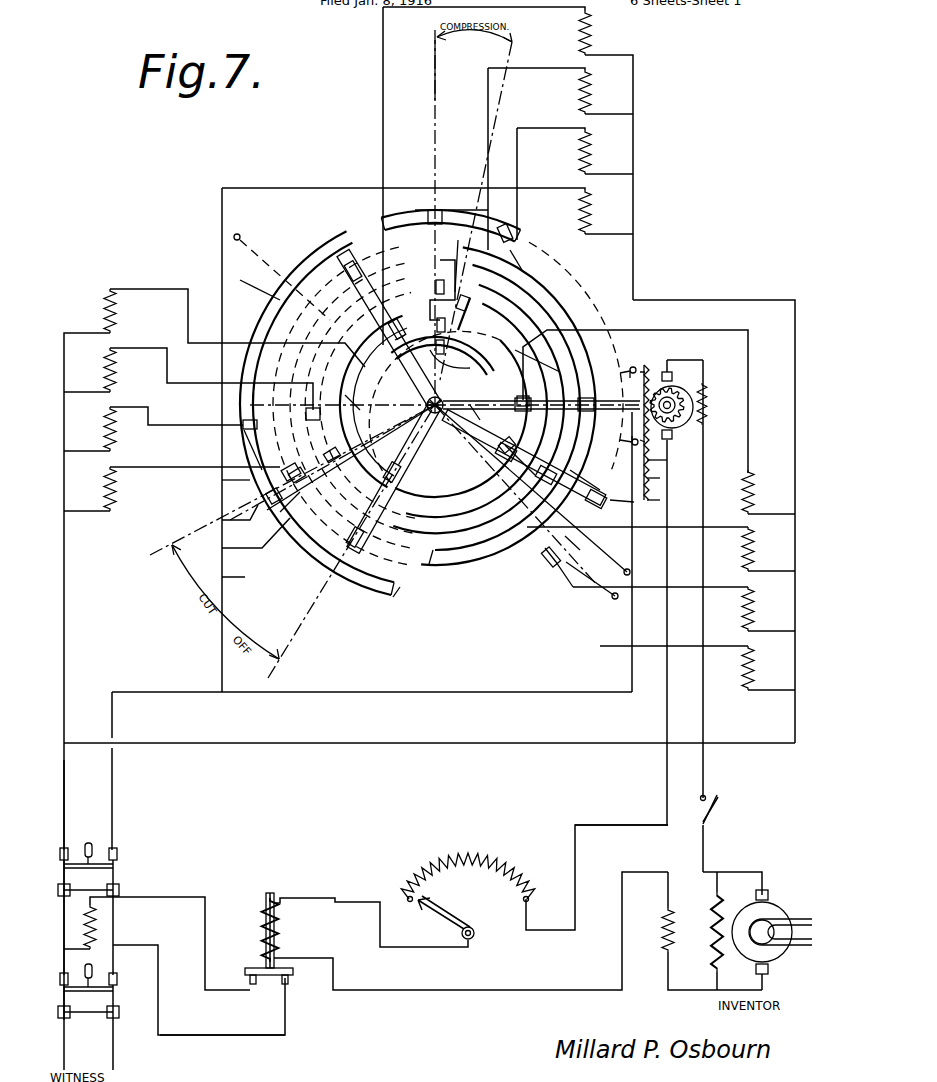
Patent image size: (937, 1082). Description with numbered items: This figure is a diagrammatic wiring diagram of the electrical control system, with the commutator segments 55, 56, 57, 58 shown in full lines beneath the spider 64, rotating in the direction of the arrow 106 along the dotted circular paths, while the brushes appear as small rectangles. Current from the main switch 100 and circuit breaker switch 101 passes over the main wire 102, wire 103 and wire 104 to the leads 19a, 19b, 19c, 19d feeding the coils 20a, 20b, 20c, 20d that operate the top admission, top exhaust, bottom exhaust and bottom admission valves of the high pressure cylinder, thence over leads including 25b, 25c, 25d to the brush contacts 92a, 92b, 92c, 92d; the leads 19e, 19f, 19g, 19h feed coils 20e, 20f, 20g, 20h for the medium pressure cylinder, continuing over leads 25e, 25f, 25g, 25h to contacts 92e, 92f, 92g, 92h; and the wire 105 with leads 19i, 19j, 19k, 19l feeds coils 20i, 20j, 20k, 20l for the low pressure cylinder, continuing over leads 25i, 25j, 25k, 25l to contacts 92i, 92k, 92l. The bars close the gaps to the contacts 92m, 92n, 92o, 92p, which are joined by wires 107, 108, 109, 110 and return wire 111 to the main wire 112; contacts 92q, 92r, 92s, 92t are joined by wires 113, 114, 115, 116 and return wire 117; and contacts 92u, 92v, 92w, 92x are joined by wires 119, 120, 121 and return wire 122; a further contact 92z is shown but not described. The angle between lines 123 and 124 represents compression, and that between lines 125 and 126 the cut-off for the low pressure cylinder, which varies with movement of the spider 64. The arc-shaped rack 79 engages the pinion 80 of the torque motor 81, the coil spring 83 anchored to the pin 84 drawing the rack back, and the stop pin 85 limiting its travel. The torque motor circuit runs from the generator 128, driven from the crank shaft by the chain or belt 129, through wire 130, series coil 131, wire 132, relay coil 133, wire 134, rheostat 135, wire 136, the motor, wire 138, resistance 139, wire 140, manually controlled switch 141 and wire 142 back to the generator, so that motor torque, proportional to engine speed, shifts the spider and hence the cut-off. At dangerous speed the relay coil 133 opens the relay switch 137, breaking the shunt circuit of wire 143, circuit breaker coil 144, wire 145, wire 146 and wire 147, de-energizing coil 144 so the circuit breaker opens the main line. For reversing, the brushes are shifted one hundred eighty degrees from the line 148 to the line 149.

The lead 19a is at (636, 55).
The lead 19b is at (636, 114).
The lead 19c is at (636, 172).
The lead 19d is at (636, 232).
The lead 19e is at (784, 513).
The lead 19f is at (786, 571).
The lead 19g is at (786, 631).
The lead 19h is at (786, 690).
The lead 19i is at (88, 325).
The lead 19j is at (88, 385).
The lead 19k is at (88, 445).
The lead 19l is at (88, 502).
The coil 20a is at (592, 36).
The coil 20b is at (592, 93).
The coil 20c is at (592, 149).
The coil 20d is at (592, 207).
The coil 20e is at (754, 490).
The coil 20f is at (754, 546).
The coil 20g is at (754, 598).
The coil 20h is at (754, 661).
The coil 20i is at (114, 313).
The coil 20j is at (114, 363).
The coil 20k is at (114, 423).
The coil 20l is at (114, 483).
The lead 25b is at (540, 62).
The lead 25c is at (545, 124).
The lead 25d is at (548, 184).
The lead 25e is at (745, 460).
The lead 25f is at (720, 527).
The lead 25g is at (720, 588).
The lead 25h is at (720, 648).
The lead 25i is at (192, 335).
The lead 25j is at (174, 370).
The lead 25k is at (174, 426).
The lead 25l is at (176, 469).
The commutator segment 55 is at (422, 479).
The commutator segment 56 is at (418, 518).
The commutator segment 57 is at (418, 550).
The commutator segment 58 is at (409, 584).
The spider 64 is at (453, 431).
The rack 79 is at (649, 364).
The pinion 80 is at (678, 390).
The torque motor 81 is at (690, 424).
The coil spring 83 is at (651, 479).
The pin 84 is at (651, 501).
The stop pin 85 is at (626, 377).
The brush contact 92a is at (555, 450).
The brush contact 92b is at (504, 308).
The brush contact 92c is at (512, 230).
The brush contact 92d is at (454, 210).
The brush contact 92e is at (518, 413).
The brush contact 92f is at (612, 365).
The brush contact 92g is at (556, 566).
The brush contact 92h is at (592, 452).
The brush contact 92i is at (488, 421).
The brush contact 92k is at (246, 436).
The brush contact 92l is at (390, 430).
The brush contact 92m is at (447, 336).
The brush contact 92n is at (428, 294).
The brush contact 92o is at (422, 212).
The brush contact 92p is at (342, 252).
The brush contact 92q is at (396, 342).
The brush contact 92r is at (490, 468).
The brush contact 92s is at (604, 500).
The brush contact 92t is at (391, 435).
The brush contact 92u is at (383, 402).
The brush contact 92v is at (480, 420).
The brush contact 92w is at (260, 490).
The brush contact 92x is at (358, 480).
The contact 92z is at (344, 548).
The main switch 100 is at (114, 999).
The circuit breaker switch 101 is at (120, 878).
The main wire 102 is at (66, 809).
The wire 103 is at (436, 744).
The wire 104 is at (688, 292).
The wire 105 is at (66, 611).
The arrow 106 is at (482, 382).
The wire 107 is at (458, 300).
The wire 108 is at (422, 274).
The wire 109 is at (355, 184).
The wire 110 is at (328, 208).
The return wire 111 is at (230, 238).
The main wire 112 is at (112, 714).
The wire 113 is at (490, 440).
The wire 114 is at (634, 502).
The wire 115 is at (648, 460).
The wire 116 is at (632, 547).
The return wire 117 is at (432, 690).
The wire 119 is at (334, 488).
The wire 120 is at (276, 524).
The wire 121 is at (280, 547).
The return wire 122 is at (227, 577).
The line 123 is at (434, 97).
The line 124 is at (508, 88).
The line 125 is at (297, 632).
The line 126 is at (214, 524).
The compound wound generator 128 is at (770, 906).
The chain or belt 129 is at (798, 921).
The wire 130 is at (692, 990).
The series coil 131 is at (664, 944).
The wire 132 is at (476, 990).
The relay coil 133 is at (276, 934).
The wire 134 is at (328, 900).
The rheostat 135 is at (475, 840).
The wire 136 is at (613, 823).
The relay switch 137 is at (282, 980).
The wire 138 is at (686, 356).
The resistance 139 is at (704, 403).
The wire 140 is at (704, 712).
The manually controlled switch 141 is at (714, 812).
The wire 142 is at (734, 872).
The wire 143 is at (206, 940).
The circuit breaker coil 144 is at (108, 921).
The wire 145 is at (64, 926).
The wire 146 is at (234, 1035).
The wire 147 is at (116, 961).
The line 148 is at (554, 544).
The line 149 is at (234, 264).